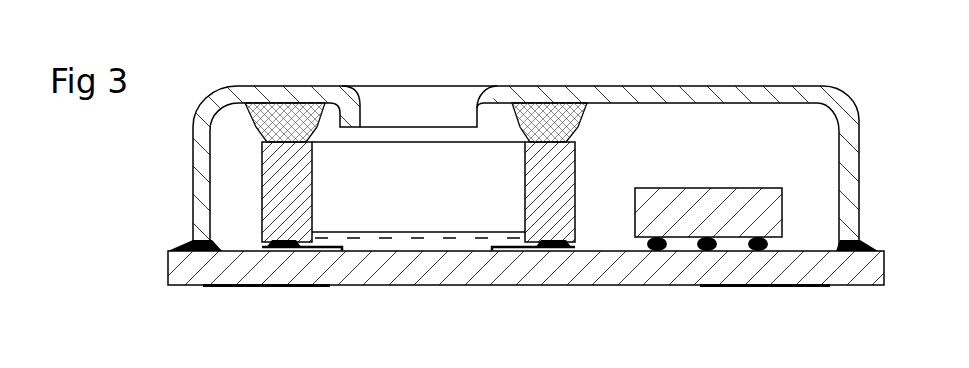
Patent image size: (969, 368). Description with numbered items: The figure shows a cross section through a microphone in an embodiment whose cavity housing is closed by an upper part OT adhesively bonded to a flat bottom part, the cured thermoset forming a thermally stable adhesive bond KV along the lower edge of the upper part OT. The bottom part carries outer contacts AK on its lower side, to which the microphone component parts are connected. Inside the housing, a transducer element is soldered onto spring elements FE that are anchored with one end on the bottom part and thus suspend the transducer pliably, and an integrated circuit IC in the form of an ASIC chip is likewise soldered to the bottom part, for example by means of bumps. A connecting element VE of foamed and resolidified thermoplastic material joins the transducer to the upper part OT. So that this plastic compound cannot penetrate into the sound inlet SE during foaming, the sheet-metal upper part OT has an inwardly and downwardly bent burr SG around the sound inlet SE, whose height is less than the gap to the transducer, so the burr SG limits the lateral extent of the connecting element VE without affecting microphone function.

The outer contacts AK is at (297, 286).
The upper part OT is at (677, 98).
The adhesive bond KV is at (174, 248).
The burr SG is at (478, 122).
The sound inlet SE is at (404, 120).
The connecting element VE is at (300, 128).
The spring elements FE is at (525, 247).
The integrated circuit IC is at (683, 188).